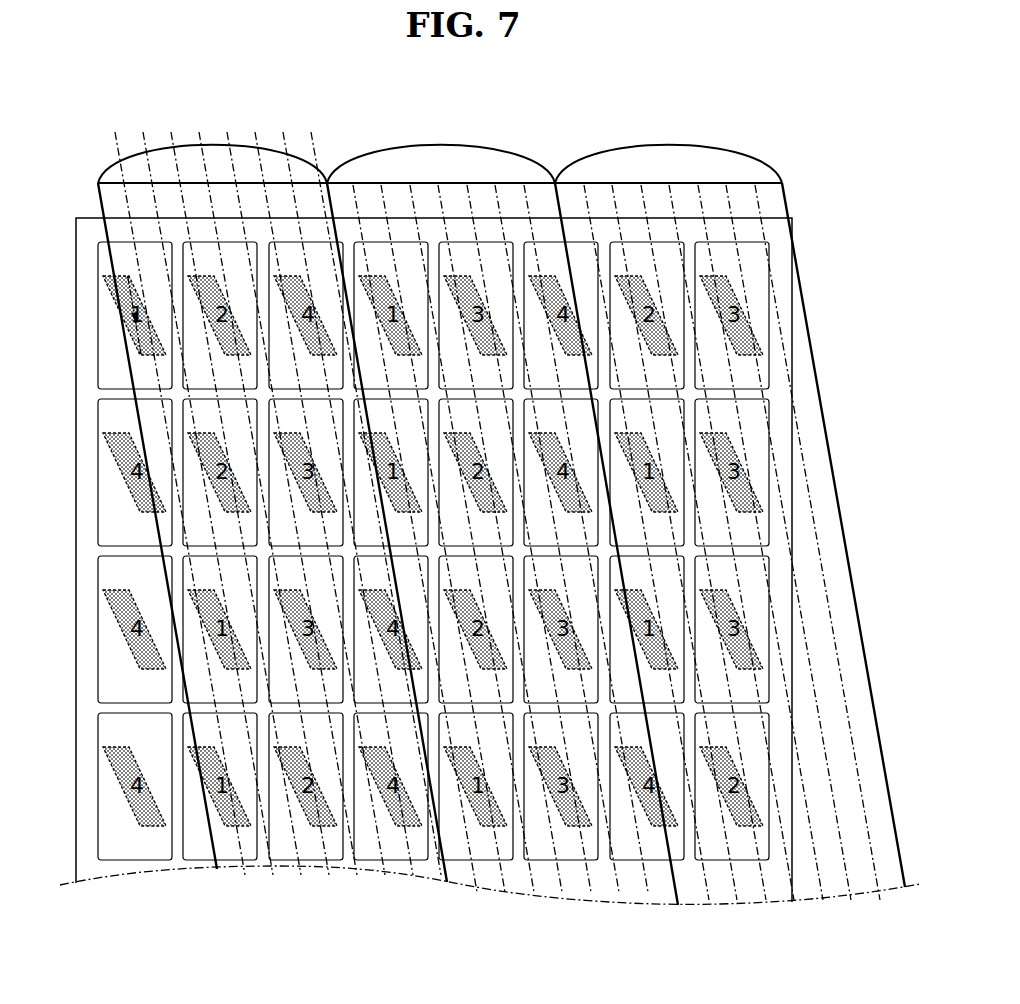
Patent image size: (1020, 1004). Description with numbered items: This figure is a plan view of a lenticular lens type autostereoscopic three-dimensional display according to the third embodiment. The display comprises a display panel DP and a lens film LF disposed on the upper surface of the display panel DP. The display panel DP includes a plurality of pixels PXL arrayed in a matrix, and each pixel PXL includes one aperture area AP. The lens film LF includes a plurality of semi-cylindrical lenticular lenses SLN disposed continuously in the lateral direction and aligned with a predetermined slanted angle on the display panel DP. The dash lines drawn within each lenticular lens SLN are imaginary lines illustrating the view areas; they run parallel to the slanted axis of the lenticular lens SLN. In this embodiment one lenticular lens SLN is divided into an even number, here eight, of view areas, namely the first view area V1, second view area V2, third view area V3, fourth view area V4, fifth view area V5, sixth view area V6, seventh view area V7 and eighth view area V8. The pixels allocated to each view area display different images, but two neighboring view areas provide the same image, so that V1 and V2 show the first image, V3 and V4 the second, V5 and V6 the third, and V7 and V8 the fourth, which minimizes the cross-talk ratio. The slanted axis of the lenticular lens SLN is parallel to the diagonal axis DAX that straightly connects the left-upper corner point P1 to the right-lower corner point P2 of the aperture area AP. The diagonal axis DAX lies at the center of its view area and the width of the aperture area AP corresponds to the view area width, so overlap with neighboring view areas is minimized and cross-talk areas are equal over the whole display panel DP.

The first view area V1 is at (174, 494).
The second view area V2 is at (202, 494).
The third view area V3 is at (230, 494).
The fourth view area V4 is at (258, 494).
The fifth view area V5 is at (286, 494).
The sixth view area V6 is at (314, 494).
The seventh view area V7 is at (342, 494).
The eighth view area V8 is at (370, 494).
The lenticular lens SLN is at (433, 146).
The lens film LF is at (793, 203).
The display panel DP is at (793, 472).
The pixel PXL is at (772, 317).
The aperture area AP is at (765, 343).
The left-upper corner point P1 is at (129, 278).
The right-lower corner point P2 is at (140, 353).
The diagonal axis DAX is at (133, 302).